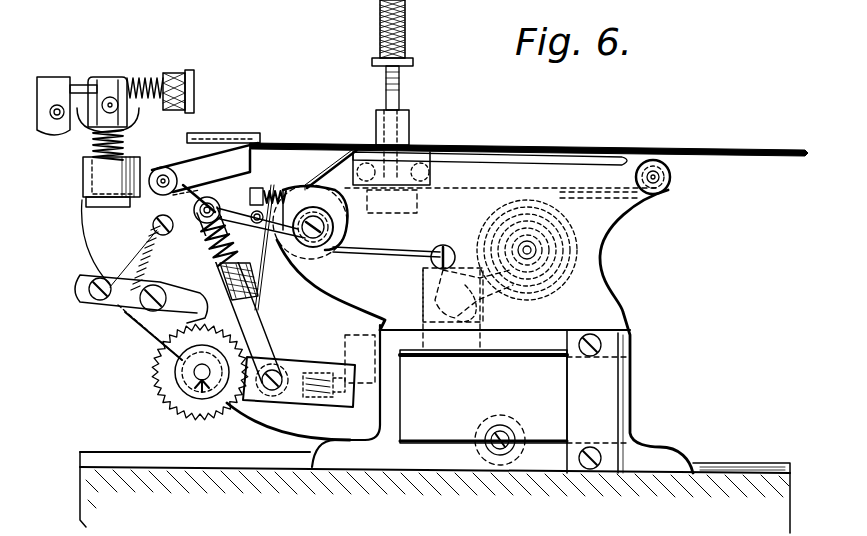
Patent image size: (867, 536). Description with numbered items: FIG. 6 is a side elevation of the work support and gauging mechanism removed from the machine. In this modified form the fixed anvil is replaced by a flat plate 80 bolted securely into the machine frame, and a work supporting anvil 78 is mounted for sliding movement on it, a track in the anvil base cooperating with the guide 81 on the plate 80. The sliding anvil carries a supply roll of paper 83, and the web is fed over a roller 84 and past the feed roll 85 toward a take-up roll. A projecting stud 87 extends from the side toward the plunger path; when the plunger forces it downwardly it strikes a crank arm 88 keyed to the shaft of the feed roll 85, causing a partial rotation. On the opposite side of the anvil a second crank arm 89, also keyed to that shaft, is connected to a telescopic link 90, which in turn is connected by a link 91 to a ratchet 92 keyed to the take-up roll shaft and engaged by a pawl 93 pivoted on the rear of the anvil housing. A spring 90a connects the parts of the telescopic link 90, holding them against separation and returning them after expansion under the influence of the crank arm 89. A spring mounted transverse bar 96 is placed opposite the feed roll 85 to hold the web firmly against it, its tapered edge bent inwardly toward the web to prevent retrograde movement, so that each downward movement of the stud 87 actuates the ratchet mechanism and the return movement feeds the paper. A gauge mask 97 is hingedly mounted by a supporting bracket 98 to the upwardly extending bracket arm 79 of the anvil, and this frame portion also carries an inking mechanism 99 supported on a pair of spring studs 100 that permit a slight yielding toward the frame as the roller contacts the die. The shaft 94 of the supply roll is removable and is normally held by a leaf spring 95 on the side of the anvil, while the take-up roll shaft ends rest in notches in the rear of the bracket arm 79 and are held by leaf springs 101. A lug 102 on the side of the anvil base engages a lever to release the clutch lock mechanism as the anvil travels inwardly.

The work supporting anvil 78 is at (605, 307).
The bracket arm 79 is at (82, 182).
The flat plate 80 is at (730, 482).
The guide 81 is at (712, 468).
The supply roll of paper 83 is at (575, 268).
The roller 84 is at (670, 185).
The feed roll 85 is at (364, 257).
The projecting stud 87 is at (408, 52).
The crank arm 88 is at (367, 195).
The second crank arm 89 is at (228, 205).
The telescopic link 90 is at (262, 327).
The spring 90a is at (215, 262).
The link 91 is at (287, 410).
The ratchet 92 is at (192, 408).
The pawl 93 is at (87, 300).
The shaft 94 is at (535, 250).
The leaf spring 95 is at (478, 300).
The transverse bar 96 is at (262, 192).
The gauge mask 97 is at (450, 145).
The supporting bracket 98 is at (182, 142).
The inking mechanism 99 is at (118, 76).
The spring studs 100 is at (90, 152).
The leaf springs 101 is at (160, 337).
The lug 102 is at (422, 310).